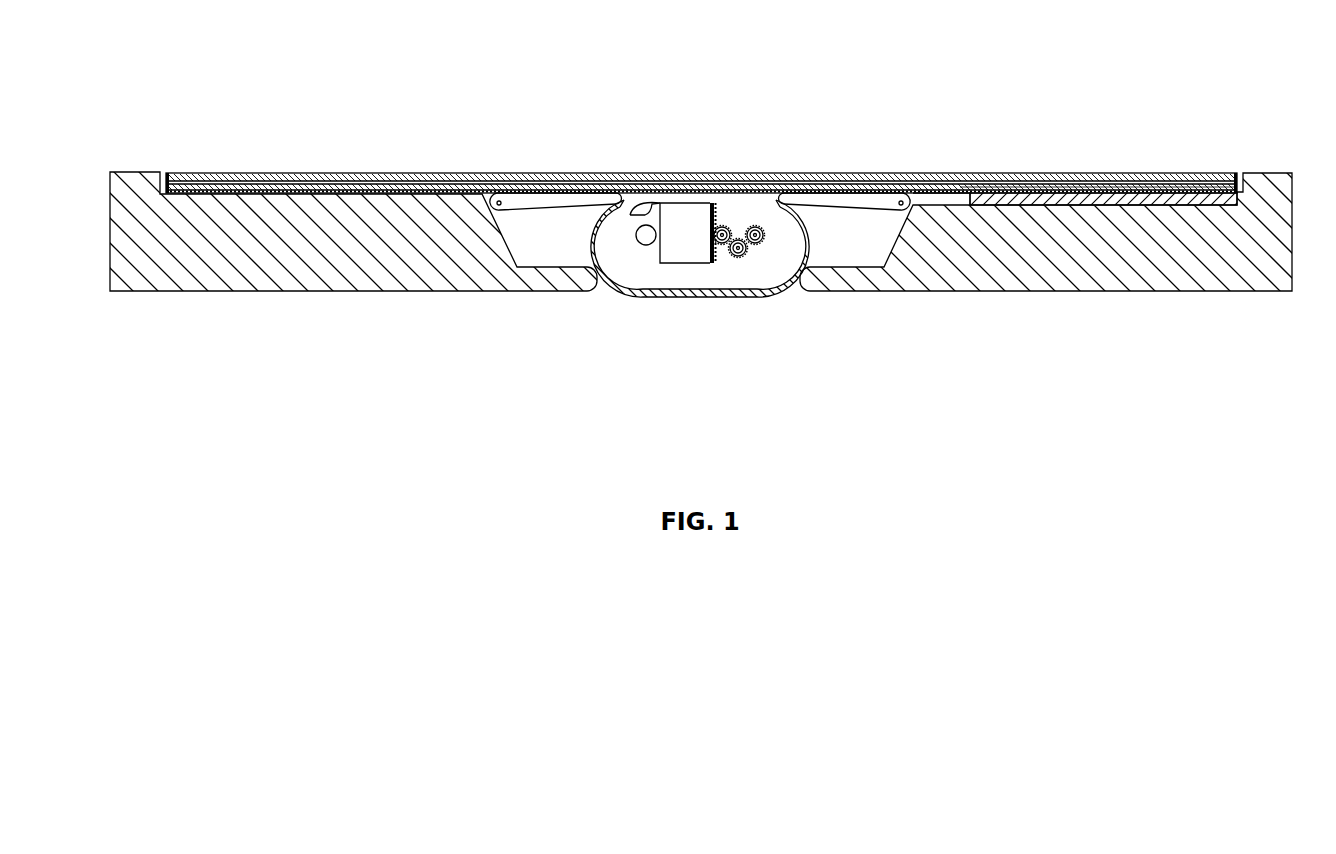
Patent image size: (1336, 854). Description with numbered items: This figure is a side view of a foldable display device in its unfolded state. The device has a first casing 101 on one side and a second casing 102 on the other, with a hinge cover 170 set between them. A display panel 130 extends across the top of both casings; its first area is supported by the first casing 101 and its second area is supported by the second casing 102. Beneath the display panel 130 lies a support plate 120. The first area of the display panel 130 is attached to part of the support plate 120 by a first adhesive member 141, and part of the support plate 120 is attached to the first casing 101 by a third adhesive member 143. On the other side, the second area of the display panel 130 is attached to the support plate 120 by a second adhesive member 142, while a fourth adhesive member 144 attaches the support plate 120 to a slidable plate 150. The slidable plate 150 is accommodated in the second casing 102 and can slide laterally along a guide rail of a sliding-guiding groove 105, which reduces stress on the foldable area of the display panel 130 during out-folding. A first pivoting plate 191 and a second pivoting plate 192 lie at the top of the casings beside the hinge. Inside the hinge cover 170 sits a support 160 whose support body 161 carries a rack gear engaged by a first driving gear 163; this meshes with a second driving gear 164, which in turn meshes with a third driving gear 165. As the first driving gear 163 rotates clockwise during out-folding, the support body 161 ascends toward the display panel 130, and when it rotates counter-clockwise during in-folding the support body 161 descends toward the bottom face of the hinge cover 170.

The first casing 101 is at (257, 272).
The second casing 102 is at (1183, 275).
The sliding-guiding groove 105 is at (943, 197).
The support plate 120 is at (645, 180).
The display panel 130 is at (674, 126).
The first adhesive member 141 is at (178, 172).
The second adhesive member 142 is at (1198, 186).
The third adhesive member 143 is at (225, 182).
The fourth adhesive member 144 is at (1120, 182).
The slidable plate 150 is at (1055, 200).
The support 160 is at (740, 303).
The support body 161 is at (680, 265).
The first driving gear 163 is at (722, 246).
The second driving gear 164 is at (737, 258).
The third driving gear 165 is at (799, 295).
The hinge cover 170 is at (624, 283).
The first pivoting plate 191 is at (522, 203).
The second pivoting plate 192 is at (878, 203).